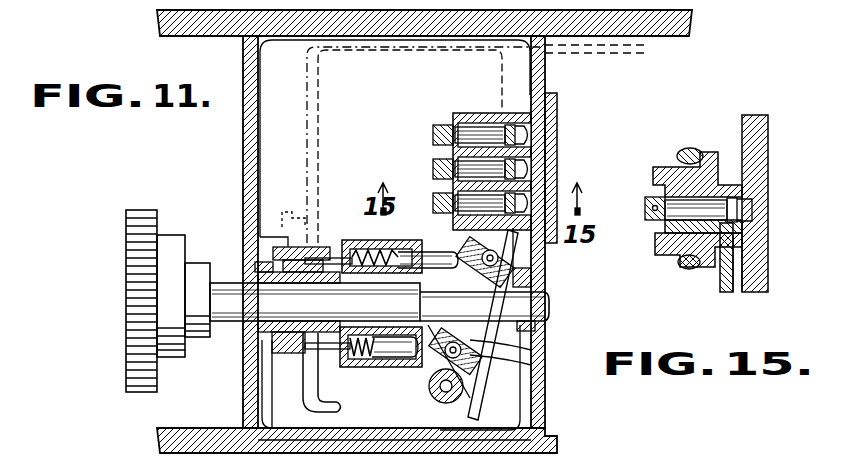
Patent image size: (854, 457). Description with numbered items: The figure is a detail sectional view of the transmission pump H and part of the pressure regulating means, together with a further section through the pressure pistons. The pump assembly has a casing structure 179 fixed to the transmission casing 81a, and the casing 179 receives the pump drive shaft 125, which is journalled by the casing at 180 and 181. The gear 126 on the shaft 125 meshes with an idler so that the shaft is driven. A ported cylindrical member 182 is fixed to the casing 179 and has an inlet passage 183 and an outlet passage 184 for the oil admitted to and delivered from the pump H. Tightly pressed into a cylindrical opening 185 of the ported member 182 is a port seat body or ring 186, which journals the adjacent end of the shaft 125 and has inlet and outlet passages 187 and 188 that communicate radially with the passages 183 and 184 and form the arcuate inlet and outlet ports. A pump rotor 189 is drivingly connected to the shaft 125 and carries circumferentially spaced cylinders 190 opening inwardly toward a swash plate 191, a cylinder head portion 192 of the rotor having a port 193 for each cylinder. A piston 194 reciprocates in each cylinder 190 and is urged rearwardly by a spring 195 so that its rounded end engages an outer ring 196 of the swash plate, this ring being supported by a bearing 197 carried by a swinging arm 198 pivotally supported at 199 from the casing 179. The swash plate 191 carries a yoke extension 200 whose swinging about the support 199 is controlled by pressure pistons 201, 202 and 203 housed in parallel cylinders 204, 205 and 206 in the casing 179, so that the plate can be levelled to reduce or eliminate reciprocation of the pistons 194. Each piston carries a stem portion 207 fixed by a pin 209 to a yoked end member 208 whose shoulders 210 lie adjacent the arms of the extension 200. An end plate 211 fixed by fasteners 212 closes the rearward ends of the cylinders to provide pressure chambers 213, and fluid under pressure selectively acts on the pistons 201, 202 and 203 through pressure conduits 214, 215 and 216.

In FIG. 11, the transmission casing 81a is at (558, 447).
In FIG. 11, the casing structure 179 is at (243, 152).
In FIG. 11, the cylindrical opening 185 is at (255, 238).
In FIG. 11, the gear 126 is at (126, 290).
In FIG. 11, the pump drive shaft 125 is at (232, 330).
In FIG. 11, the journal 180 is at (250, 285).
In FIG. 11, the journal 181 is at (530, 296).
In FIG. 11, the outer ring 196 is at (428, 312).
In FIG. 11, the pump H is at (238, 396).
In FIG. 11, the port seat body or ring 186 is at (286, 279).
In FIG. 11, the outlet passage 188 is at (332, 279).
In FIG. 11, the cylinders 190 is at (380, 275).
In FIG. 11, the inlet passage 187 is at (314, 311).
In FIG. 11, the cylinder head portion 192 is at (369, 311).
In FIG. 11, the ported cylindrical member 182 is at (290, 354).
In FIG. 11, the inlet passage 183 is at (300, 382).
In FIG. 11, the outlet passage 184 is at (345, 250).
In FIG. 11, the port 193 is at (372, 250).
In FIG. 11, the spring 195 is at (428, 260).
In FIG. 11, the cylinder 204 is at (415, 250).
In FIG. 15, the cylinder 204 is at (665, 228).
In FIG. 11, the piston 194 is at (395, 370).
In FIG. 11, the pump rotor 189 is at (345, 365).
In FIG. 11, the pressure conduit 216 is at (540, 150).
In FIG. 11, the pressure conduit 215 is at (540, 182).
In FIG. 11, the pressure conduit 214 is at (540, 212).
In FIG. 15, the pressure conduit 214 is at (735, 292).
In FIG. 11, the pressure piston 203 is at (527, 130).
In FIG. 11, the pressure piston 202 is at (527, 165).
In FIG. 11, the pressure piston 201 is at (527, 198).
In FIG. 15, the pressure piston 201 is at (768, 205).
In FIG. 11, the stem portion 207 is at (470, 115).
In FIG. 15, the stem portion 207 is at (660, 245).
In FIG. 11, the shoulders 210 is at (502, 110).
In FIG. 15, the shoulders 210 is at (706, 152).
In FIG. 11, the yoked end member 208 is at (433, 133).
In FIG. 15, the yoked end member 208 is at (680, 260).
In FIG. 11, the cylinder 206 is at (440, 152).
In FIG. 11, the pin 209 is at (433, 168).
In FIG. 15, the pin 209 is at (655, 208).
In FIG. 11, the cylinder 205 is at (440, 200).
In FIG. 11, the end plate 211 is at (556, 98).
In FIG. 15, the end plate 211 is at (768, 148).
In FIG. 11, the yoke extension 200 is at (468, 250).
In FIG. 15, the yoke extension 200 is at (688, 269).
In FIG. 11, the swinging arm 198 is at (535, 330).
In FIG. 11, the pressure chambers 213 is at (540, 268).
In FIG. 15, the pressure chambers 213 is at (752, 222).
In FIG. 11, the fasteners 212 is at (548, 243).
In FIG. 11, the swash plate 191 is at (522, 355).
In FIG. 11, the bearing 197 is at (522, 368).
In FIG. 11, the pivot support 199 is at (465, 393).